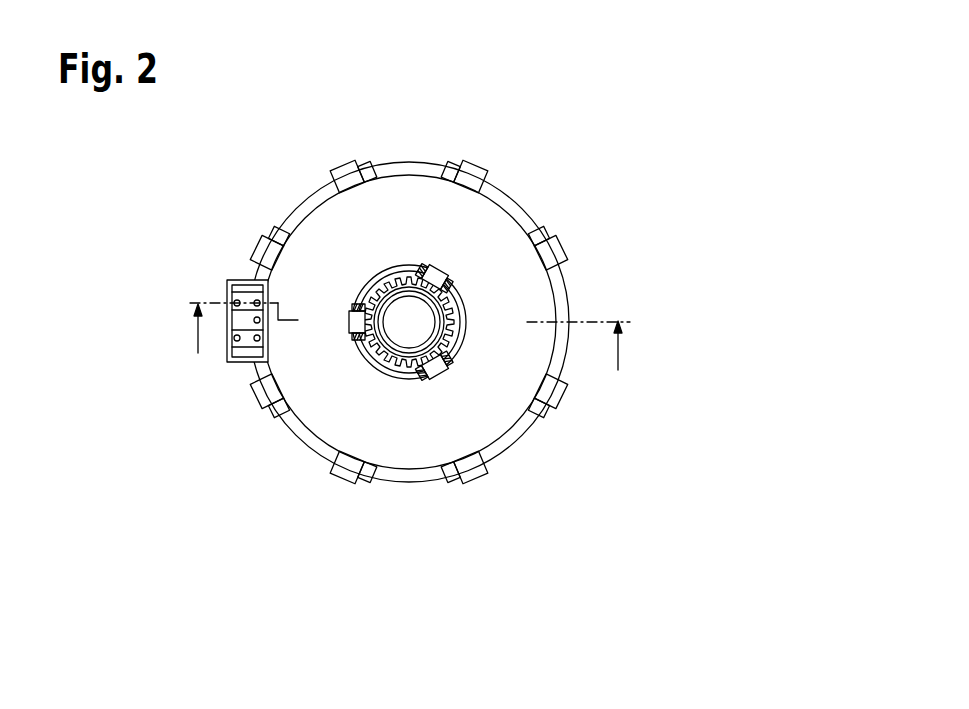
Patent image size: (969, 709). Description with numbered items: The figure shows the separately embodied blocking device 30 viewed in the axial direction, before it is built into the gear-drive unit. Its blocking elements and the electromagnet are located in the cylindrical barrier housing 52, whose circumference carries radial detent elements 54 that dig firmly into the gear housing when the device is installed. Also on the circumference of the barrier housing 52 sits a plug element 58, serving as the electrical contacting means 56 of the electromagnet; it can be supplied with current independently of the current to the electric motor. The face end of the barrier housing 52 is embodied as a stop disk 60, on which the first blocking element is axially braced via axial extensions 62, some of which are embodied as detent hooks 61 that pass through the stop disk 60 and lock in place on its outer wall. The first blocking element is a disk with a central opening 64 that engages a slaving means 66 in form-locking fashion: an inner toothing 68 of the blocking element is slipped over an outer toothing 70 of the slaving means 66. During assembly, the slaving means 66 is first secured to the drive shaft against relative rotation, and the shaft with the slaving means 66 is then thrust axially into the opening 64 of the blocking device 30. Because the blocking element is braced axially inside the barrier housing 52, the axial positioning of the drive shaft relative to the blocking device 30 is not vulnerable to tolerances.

The blocking device 30 is at (680, 177).
The barrier housing 52 is at (487, 232).
The radial detent elements 54 is at (562, 258).
The electrical contacting means 56 is at (187, 292).
The plug element 58 is at (250, 295).
The stop disk 60 is at (463, 335).
The detent hooks 61 is at (441, 280).
The axial extensions 62 is at (482, 257).
The central opening 64 is at (400, 313).
The slaving means 66 is at (480, 407).
The inner toothing 68 is at (358, 398).
The outer toothing 70 is at (383, 351).